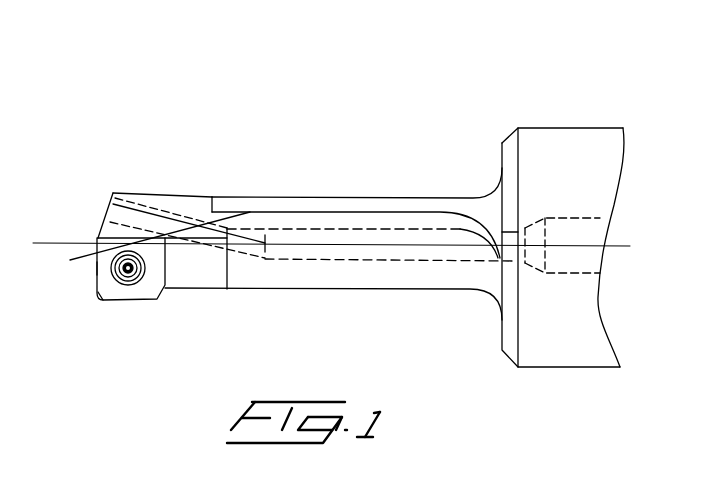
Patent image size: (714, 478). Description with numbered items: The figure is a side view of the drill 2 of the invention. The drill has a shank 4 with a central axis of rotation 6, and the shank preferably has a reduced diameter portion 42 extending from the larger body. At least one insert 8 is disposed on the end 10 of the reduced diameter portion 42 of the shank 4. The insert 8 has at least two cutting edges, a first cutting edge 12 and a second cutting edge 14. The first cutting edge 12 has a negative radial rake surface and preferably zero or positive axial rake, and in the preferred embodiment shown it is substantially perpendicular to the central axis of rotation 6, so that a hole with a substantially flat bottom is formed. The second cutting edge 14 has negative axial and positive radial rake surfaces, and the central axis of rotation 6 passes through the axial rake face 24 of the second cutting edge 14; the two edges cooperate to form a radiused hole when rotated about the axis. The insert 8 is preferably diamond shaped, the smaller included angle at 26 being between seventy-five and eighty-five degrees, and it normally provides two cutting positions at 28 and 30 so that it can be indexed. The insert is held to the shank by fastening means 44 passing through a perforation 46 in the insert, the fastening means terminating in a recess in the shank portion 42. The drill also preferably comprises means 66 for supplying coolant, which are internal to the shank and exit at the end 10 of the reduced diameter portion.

The drill 2 is at (322, 120).
The shank 4 is at (559, 128).
The central axis of rotation 6 is at (60, 245).
The insert 8 is at (97, 290).
The end 10 is at (113, 193).
The first cutting edge 12 is at (97, 268).
The second cutting edge 14 is at (70, 260).
The axial rake face 24 is at (115, 238).
The included angle 26 is at (100, 289).
The cutting position 28 is at (100, 237).
The cutting position 30 is at (166, 290).
The reduced diameter portion 42 is at (393, 197).
The fastening means 44 is at (128, 273).
The perforation 46 is at (145, 262).
The means for supplying coolant 66 is at (172, 213).